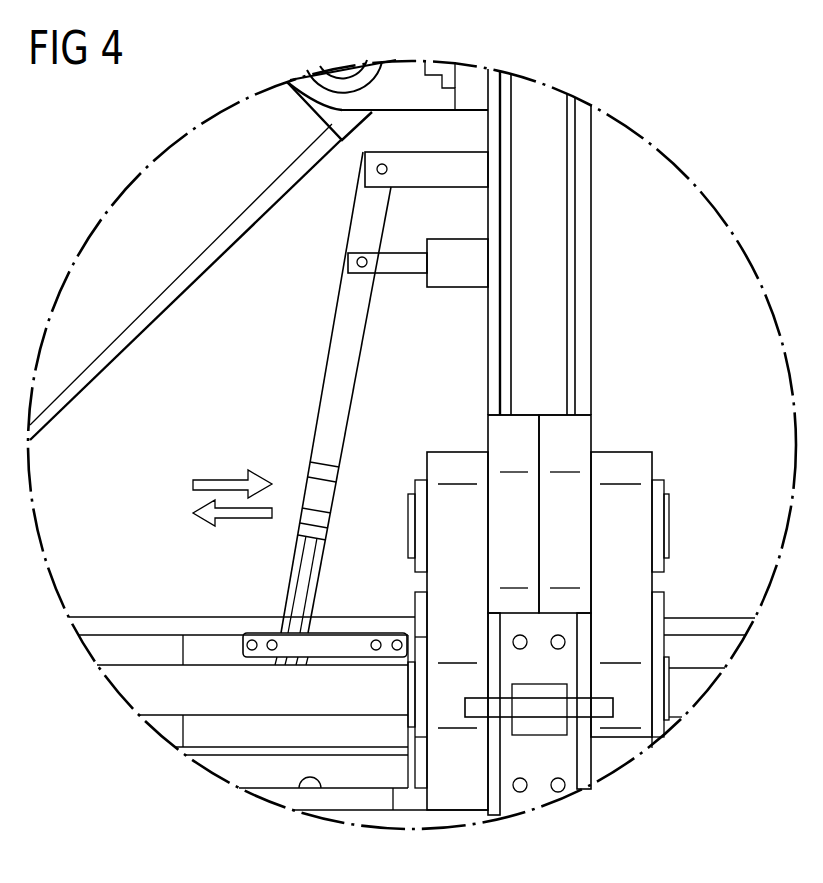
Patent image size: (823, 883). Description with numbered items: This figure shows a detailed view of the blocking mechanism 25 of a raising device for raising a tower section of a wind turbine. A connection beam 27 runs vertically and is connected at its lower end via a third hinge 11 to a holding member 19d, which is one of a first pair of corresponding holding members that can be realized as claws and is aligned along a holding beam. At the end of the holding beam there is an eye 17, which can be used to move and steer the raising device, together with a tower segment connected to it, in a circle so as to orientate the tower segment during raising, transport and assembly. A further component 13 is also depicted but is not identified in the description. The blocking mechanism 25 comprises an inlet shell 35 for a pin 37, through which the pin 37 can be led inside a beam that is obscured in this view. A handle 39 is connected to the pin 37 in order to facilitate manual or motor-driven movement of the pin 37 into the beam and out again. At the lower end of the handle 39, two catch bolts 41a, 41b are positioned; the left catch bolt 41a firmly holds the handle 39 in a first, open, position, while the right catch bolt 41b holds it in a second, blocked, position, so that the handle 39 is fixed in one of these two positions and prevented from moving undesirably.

The third hinge 11 is at (667, 527).
The lower bearing hub 13 is at (665, 675).
The eye 17 is at (477, 705).
The holding member 19d is at (620, 462).
The blocking mechanism 25 is at (291, 385).
The connection beam 27 is at (552, 248).
The inlet shell 35 is at (455, 272).
The pin 37 is at (400, 262).
The handle 39 is at (330, 343).
The catch bolt 41a is at (272, 640).
The catch bolt 41b is at (376, 640).